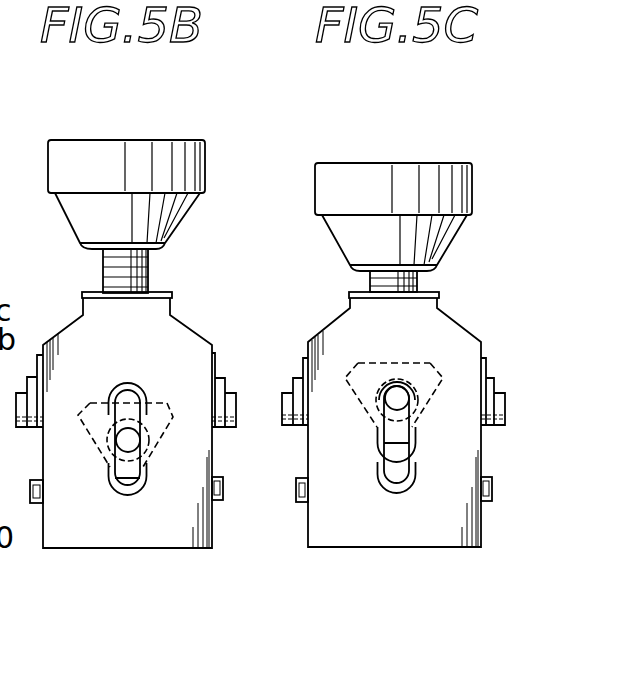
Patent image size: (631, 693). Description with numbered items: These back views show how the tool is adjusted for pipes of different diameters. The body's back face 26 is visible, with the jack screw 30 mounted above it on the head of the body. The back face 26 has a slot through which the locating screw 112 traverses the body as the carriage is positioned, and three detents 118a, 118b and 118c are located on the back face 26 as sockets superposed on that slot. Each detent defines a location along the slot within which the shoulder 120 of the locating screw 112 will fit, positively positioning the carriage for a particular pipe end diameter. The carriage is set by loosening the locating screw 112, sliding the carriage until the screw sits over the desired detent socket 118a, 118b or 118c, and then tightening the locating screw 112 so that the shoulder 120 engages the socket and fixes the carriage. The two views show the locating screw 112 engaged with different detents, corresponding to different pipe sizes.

In FIG. 5B, the jack screw 30 is at (148, 268).
In FIG. 5C, the jack screw 30 is at (417, 283).
In FIG. 5B, the back face 26 is at (147, 346).
In FIG. 5C, the back face 26 is at (403, 338).
In FIG. 5B, the locating screw 112 is at (108, 451).
In FIG. 5C, the locating screw 112 is at (377, 417).
In FIG. 5B, the detent 118a is at (115, 492).
In FIG. 5C, the detent 118a is at (380, 492).
In FIG. 5B, the detent 118b is at (152, 415).
In FIG. 5C, the detent 118b is at (408, 420).
In FIG. 5B, the detent 118c is at (138, 402).
In FIG. 5C, the detent 118c is at (403, 380).
In FIG. 5B, the shoulder 120 is at (147, 438).
In FIG. 5C, the shoulder 120 is at (392, 381).